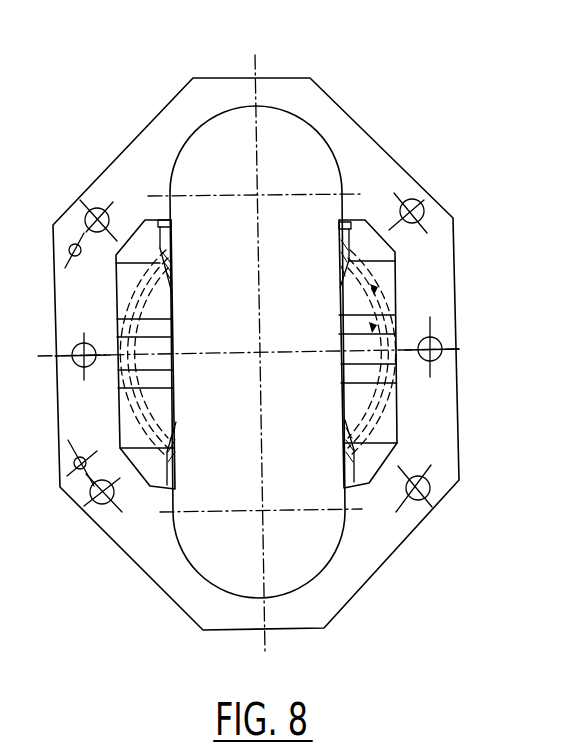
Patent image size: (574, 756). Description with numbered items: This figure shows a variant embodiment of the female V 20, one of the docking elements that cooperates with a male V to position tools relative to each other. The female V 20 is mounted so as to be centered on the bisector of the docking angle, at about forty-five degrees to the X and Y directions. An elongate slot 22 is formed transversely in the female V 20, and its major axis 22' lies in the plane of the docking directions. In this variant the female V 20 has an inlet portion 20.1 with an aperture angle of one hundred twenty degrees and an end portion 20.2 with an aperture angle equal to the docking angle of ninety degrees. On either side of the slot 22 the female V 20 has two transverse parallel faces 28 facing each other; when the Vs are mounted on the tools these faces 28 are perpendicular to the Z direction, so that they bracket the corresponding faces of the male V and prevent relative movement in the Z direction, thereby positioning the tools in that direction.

The elongate slot 22 is at (248, 354).
The major axis 22' is at (265, 310).
The transverse parallel faces 28 is at (172, 248).
The female V 20 is at (378, 252).
The inlet portion 20.1 is at (372, 311).
The end portion 20.2 is at (376, 358).